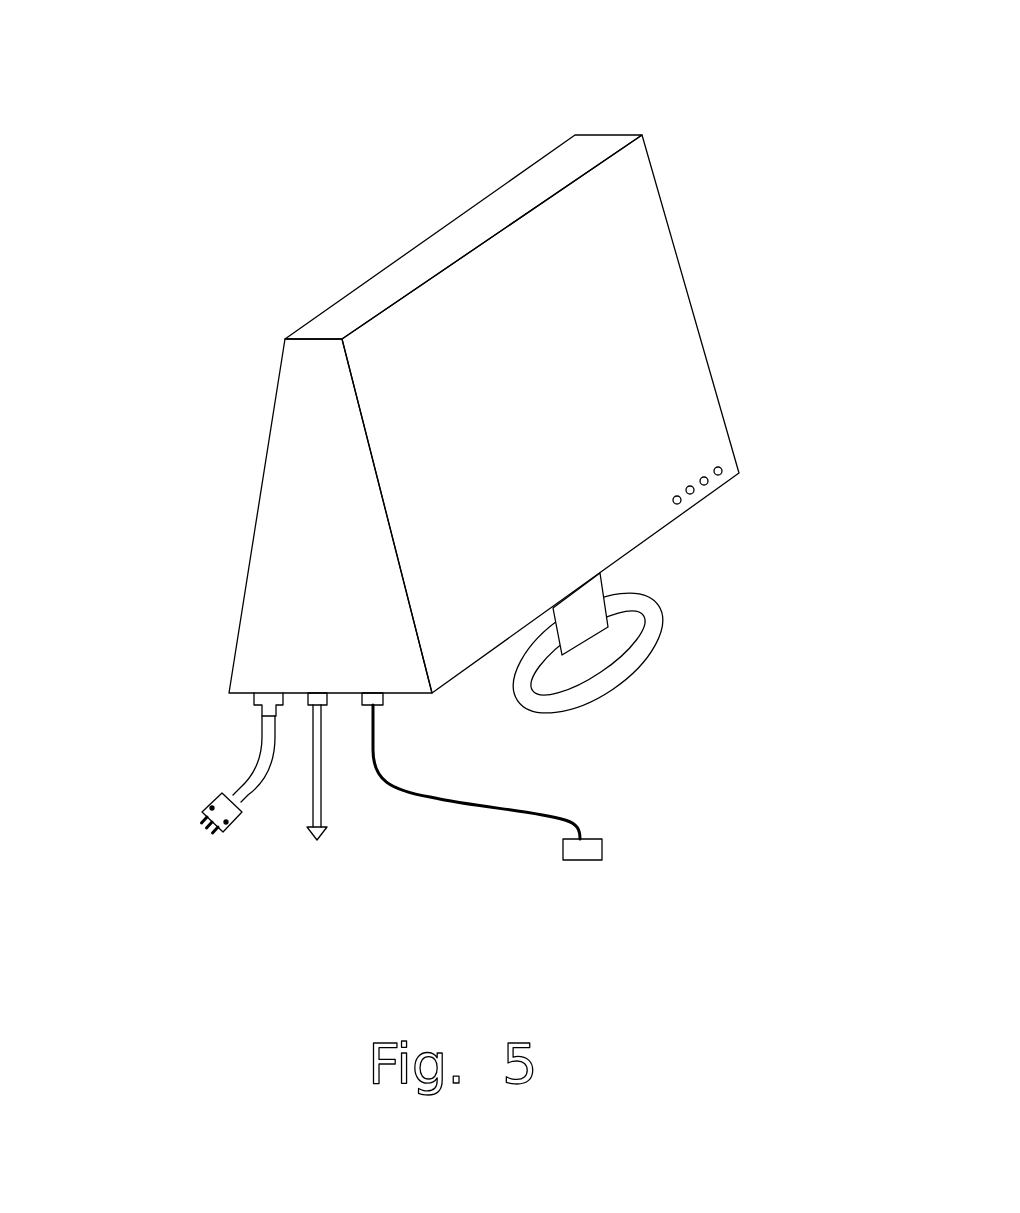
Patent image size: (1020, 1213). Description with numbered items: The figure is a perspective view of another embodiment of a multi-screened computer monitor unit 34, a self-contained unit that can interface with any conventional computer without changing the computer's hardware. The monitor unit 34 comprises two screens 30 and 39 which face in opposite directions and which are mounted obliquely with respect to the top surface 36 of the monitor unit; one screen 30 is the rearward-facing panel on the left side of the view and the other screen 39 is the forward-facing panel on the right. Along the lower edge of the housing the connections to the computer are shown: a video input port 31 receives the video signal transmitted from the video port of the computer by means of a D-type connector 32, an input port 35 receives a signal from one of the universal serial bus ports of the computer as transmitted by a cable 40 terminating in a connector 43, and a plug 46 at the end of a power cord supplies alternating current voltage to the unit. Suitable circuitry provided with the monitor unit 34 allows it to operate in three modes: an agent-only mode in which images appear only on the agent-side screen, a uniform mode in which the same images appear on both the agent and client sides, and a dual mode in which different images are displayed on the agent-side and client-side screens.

The screen 30 is at (267, 448).
The video input port 31 is at (313, 703).
The D-type connector 32 is at (318, 843).
The multi-screened computer monitor unit 34 is at (688, 138).
The input port 35 is at (378, 705).
The top surface 36 is at (447, 250).
The screen 39 is at (670, 303).
The cable 40 is at (440, 805).
The connector 43 is at (582, 852).
The plug 46 is at (212, 802).